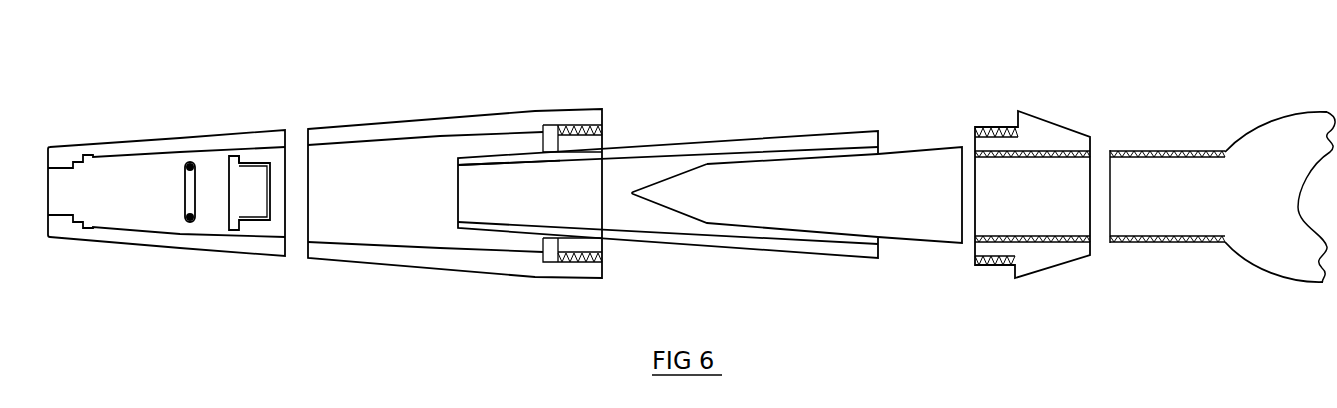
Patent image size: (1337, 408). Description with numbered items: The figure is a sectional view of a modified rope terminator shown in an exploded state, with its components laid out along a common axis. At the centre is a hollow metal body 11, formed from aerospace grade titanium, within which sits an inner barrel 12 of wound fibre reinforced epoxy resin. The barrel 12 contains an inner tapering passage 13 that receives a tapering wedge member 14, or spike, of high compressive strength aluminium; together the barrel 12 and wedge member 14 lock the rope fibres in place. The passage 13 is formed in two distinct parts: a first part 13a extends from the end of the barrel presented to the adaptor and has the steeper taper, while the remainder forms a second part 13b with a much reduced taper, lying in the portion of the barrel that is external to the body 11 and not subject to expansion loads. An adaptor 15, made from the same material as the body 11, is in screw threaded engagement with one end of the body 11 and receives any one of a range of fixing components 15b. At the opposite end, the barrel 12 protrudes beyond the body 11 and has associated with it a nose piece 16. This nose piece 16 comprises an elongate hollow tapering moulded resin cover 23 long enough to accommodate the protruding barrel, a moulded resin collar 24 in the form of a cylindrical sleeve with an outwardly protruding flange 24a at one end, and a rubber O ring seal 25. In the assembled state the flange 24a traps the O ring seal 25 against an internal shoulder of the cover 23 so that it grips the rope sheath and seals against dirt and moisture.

The hollow metal body 11 is at (408, 129).
The inner barrel 12 is at (700, 152).
The inner tapering passage 13 is at (647, 168).
The first part of the passage 13a is at (778, 150).
The second part of the passage 13b is at (528, 168).
The tapering wedge member 14 is at (927, 167).
The adaptor 15 is at (1048, 137).
The fixing component 15b is at (1216, 195).
The nose piece 16 is at (192, 110).
The cover 23 is at (148, 238).
The collar 24 is at (255, 226).
The flange 24a is at (235, 156).
The O ring seal 25 is at (183, 193).